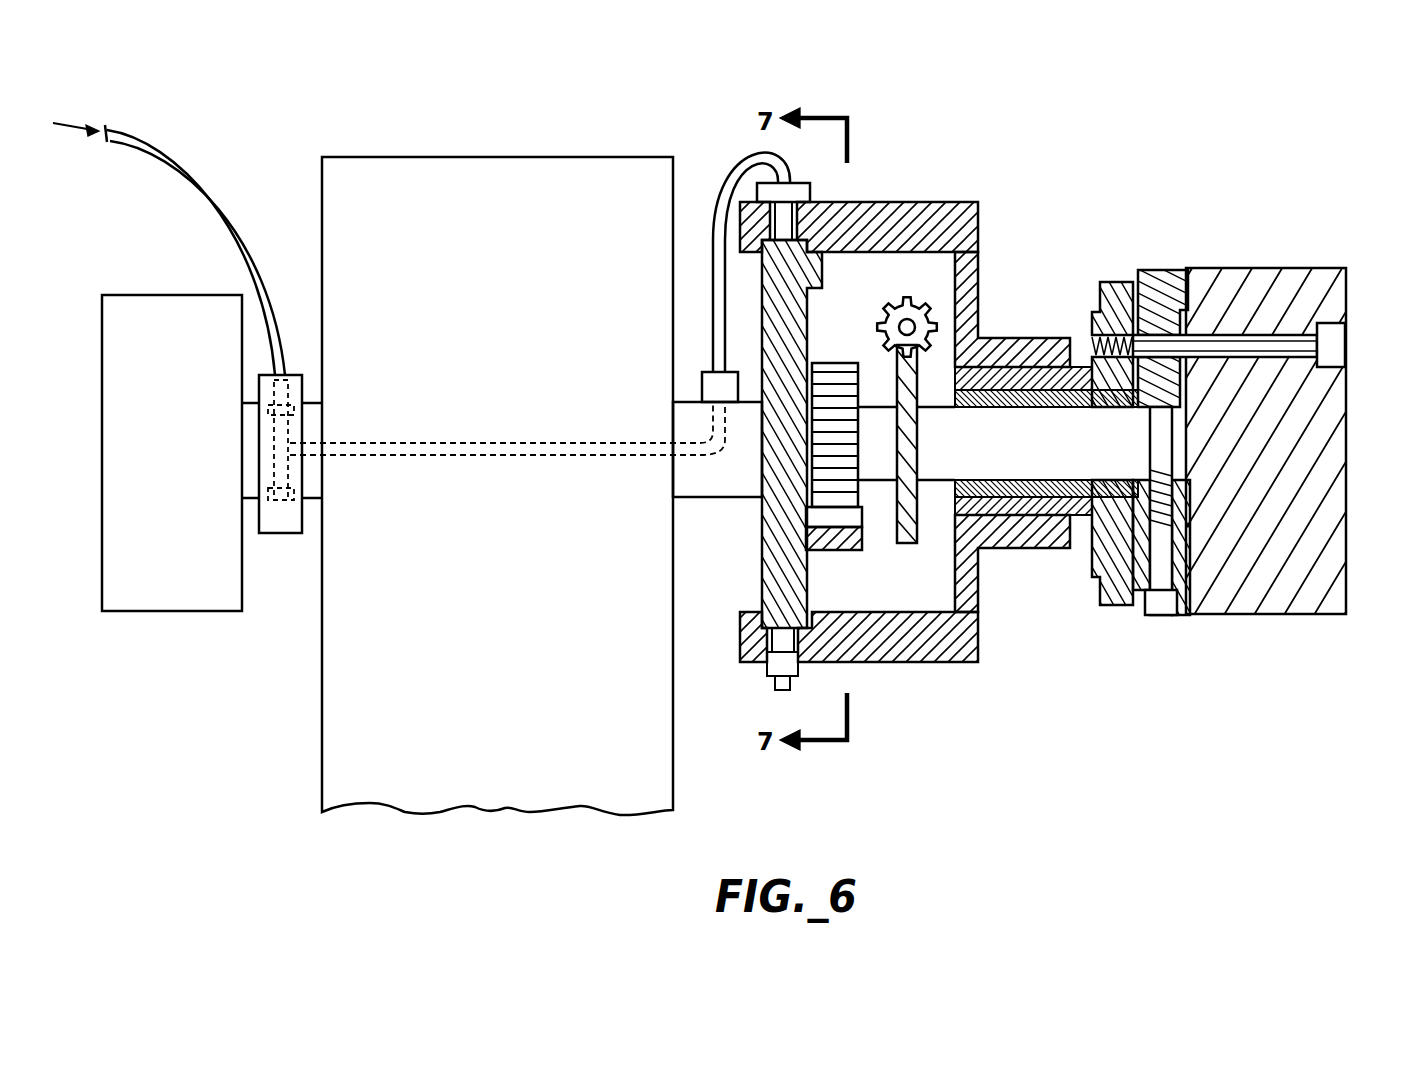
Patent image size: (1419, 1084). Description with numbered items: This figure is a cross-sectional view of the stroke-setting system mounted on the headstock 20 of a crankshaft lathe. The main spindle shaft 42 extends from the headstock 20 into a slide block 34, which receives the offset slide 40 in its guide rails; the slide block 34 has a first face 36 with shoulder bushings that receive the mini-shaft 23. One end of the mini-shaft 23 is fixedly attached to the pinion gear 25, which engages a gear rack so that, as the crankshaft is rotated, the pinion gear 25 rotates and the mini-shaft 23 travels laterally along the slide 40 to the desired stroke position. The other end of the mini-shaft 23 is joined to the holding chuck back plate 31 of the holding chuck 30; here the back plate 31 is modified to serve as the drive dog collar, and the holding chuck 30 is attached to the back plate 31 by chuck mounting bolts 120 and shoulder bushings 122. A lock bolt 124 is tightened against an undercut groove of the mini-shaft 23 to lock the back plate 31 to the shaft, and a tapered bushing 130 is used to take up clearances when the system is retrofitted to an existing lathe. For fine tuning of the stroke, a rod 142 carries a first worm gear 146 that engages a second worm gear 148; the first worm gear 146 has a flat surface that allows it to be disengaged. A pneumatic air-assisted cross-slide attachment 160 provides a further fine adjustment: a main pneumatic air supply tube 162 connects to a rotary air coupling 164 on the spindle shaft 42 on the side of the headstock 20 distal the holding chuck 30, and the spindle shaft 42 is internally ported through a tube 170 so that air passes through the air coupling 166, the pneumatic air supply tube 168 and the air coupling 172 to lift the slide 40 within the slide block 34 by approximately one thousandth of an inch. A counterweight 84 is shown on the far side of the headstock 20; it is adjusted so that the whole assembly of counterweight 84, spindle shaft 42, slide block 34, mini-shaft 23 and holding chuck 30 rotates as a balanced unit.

The headstock 20 is at (458, 157).
The mini-shaft 23 is at (1080, 468).
The pinion gear 25 is at (812, 490).
The holding chuck 30 is at (1240, 268).
The holding chuck back plate 31 is at (1160, 270).
The slide block 34 is at (965, 662).
The first face 36 is at (980, 245).
The slide 40 is at (762, 552).
The main spindle shaft 42 is at (700, 487).
The counterweight 84 is at (160, 295).
The chuck mounting bolt 120 is at (1336, 346).
The shoulder bushing 122 is at (1103, 600).
The lock bolt 124 is at (1162, 612).
The tapered bushing 130 is at (1088, 372).
The rod 142 is at (905, 297).
The first worm gear 146 is at (907, 320).
The second worm gear 148 is at (900, 545).
The pneumatic air-assisted cross-slide attachment 160 is at (248, 198).
The main pneumatic air supply tube 162 is at (140, 134).
The rotary air coupling 164 is at (270, 533).
The air coupling 166 is at (700, 390).
The pneumatic air supply tube 168 is at (727, 165).
The tube 170 is at (400, 443).
The air coupling 172 is at (785, 183).